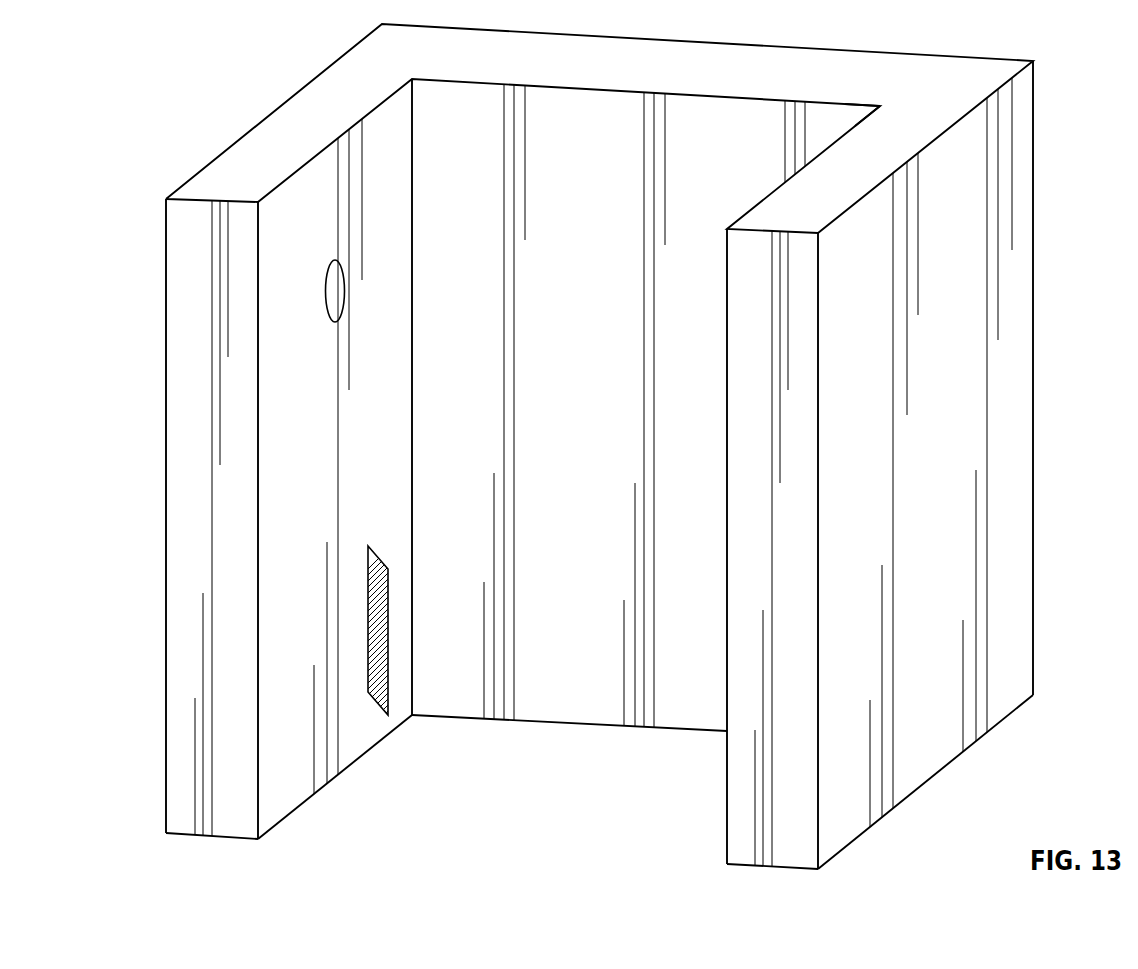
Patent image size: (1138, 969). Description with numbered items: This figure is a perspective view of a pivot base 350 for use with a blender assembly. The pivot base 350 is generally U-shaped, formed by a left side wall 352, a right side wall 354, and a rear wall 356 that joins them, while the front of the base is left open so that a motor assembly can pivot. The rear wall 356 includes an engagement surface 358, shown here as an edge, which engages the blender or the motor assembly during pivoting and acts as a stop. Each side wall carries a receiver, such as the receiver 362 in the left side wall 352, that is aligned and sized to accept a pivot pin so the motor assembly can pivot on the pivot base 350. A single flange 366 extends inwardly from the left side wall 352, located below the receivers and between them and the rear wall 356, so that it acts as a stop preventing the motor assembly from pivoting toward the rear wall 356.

The pivot base 350 is at (283, 101).
The left side wall 352 is at (165, 262).
The right side wall 354 is at (957, 465).
The rear wall 356 is at (612, 153).
The engagement surface 358 is at (857, 100).
The receiver 362 is at (332, 292).
The flange 366 is at (389, 677).